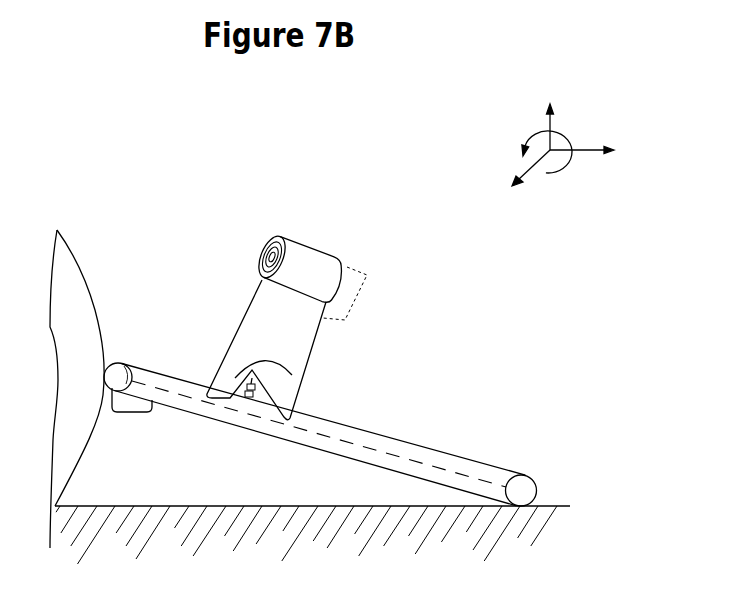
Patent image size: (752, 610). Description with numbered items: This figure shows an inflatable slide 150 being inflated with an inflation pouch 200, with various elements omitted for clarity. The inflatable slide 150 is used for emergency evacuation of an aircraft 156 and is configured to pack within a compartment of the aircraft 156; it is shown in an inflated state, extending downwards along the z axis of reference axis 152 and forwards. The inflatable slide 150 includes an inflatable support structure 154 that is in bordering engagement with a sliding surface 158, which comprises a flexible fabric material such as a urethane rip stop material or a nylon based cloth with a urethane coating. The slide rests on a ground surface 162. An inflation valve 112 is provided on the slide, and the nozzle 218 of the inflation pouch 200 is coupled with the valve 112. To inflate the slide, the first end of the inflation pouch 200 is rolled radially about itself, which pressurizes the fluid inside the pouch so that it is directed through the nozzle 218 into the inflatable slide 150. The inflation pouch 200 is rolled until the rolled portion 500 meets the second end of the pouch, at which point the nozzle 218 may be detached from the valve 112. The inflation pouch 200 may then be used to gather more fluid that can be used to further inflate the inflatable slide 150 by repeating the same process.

The inflation valve 112 is at (254, 394).
The inflatable slide 150 is at (355, 434).
The reference axis 152 is at (620, 91).
The support structure 154 is at (320, 434).
The aircraft 156 is at (80, 283).
The sliding surface 158 is at (407, 458).
The ground surface 162 is at (552, 500).
The inflation pouch 200 is at (319, 321).
The nozzle 218 is at (256, 383).
The rolled portion 500 is at (357, 298).